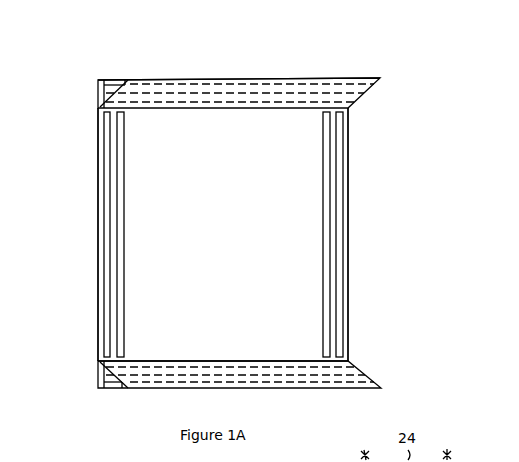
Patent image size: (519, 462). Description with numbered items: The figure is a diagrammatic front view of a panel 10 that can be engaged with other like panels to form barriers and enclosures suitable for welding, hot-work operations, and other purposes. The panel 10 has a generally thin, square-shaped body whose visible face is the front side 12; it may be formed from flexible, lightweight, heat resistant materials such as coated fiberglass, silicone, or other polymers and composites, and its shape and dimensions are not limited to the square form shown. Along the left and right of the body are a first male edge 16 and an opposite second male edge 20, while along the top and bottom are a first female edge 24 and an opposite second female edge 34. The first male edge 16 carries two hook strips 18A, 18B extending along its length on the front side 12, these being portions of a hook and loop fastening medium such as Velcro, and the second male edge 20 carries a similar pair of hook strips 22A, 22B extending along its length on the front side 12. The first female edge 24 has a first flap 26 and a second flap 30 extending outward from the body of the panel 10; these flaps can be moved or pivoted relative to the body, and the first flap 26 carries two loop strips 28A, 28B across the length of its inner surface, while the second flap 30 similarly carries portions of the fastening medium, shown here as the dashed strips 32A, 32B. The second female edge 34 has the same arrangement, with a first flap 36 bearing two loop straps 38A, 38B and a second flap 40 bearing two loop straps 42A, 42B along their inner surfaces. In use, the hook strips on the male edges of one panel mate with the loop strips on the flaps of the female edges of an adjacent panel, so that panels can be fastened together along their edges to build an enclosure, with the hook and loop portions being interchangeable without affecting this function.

The panel 10 is at (418, 302).
The front side 12 is at (226, 243).
The first male edge 16 is at (349, 228).
The hook strip 18A is at (340, 250).
The hook strip 18B is at (327, 193).
The second male edge 20 is at (98, 198).
The hook strip 22A is at (108, 281).
The hook strip 22B is at (118, 249).
The first female edge 24 is at (137, 108).
The first flap 26 is at (108, 84).
The loop strip 28A is at (103, 80).
The loop strip 28B is at (99, 95).
The second flap 30 is at (147, 78).
The upper dashed layer 32A is at (267, 85).
The lower dashed layer 32B is at (247, 100).
The second female edge 34 is at (210, 360).
The first flap 36 is at (125, 389).
The loop strap 38A is at (111, 388).
The loop strap 38B is at (100, 372).
The second flap 40 is at (302, 390).
The loop strap 42A is at (252, 380).
The loop strap 42B is at (232, 368).